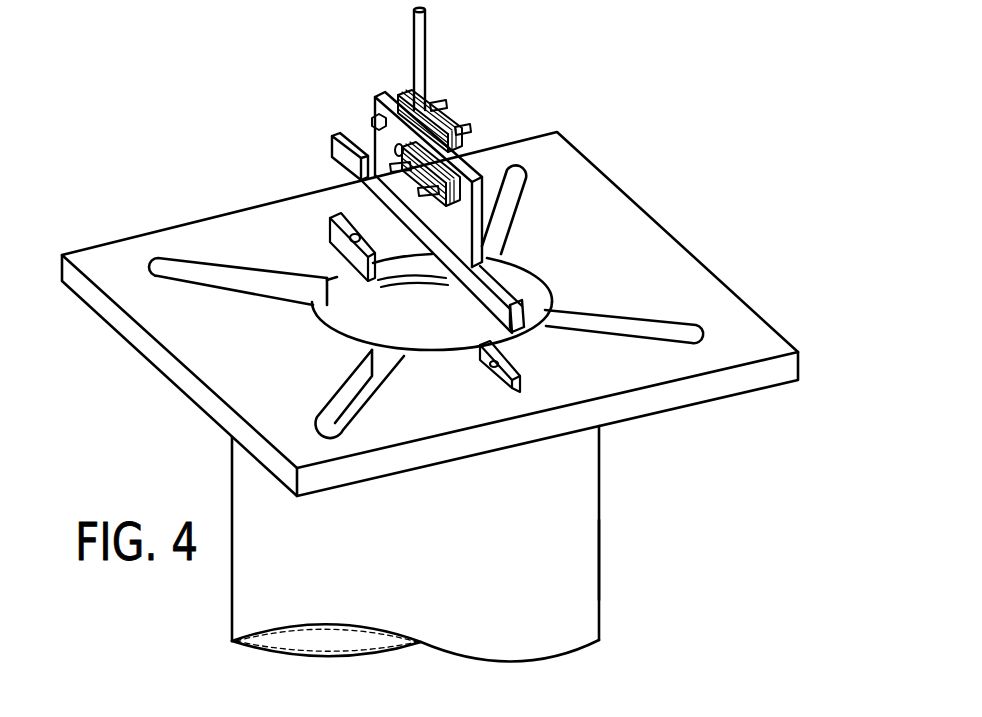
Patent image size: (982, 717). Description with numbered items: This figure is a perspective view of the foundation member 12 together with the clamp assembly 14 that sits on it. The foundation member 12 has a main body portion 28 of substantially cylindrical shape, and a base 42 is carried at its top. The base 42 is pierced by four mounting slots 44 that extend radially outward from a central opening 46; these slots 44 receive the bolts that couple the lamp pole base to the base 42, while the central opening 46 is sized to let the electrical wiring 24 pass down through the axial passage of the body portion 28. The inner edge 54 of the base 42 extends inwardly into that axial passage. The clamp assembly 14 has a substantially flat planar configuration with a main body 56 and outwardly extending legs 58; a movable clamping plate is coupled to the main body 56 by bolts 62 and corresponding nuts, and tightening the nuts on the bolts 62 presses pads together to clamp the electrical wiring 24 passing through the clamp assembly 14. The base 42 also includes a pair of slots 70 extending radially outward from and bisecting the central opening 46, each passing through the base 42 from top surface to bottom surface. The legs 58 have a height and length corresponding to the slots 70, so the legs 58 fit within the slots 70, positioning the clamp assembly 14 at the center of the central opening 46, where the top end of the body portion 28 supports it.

The foundation member 12 is at (612, 479).
The clamp assembly 14 is at (294, 92).
The electrical wiring 24 is at (428, 48).
The main body portion 28 is at (573, 545).
The base 42 is at (641, 207).
The slots 44 is at (210, 272).
The central opening 46 is at (380, 321).
The inner edge 54 is at (416, 278).
The main body 56 is at (383, 187).
The legs 58 is at (338, 157).
The bolts 62 is at (392, 160).
The slots 70 is at (347, 233).